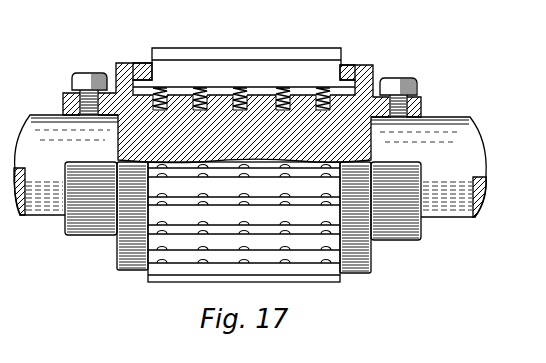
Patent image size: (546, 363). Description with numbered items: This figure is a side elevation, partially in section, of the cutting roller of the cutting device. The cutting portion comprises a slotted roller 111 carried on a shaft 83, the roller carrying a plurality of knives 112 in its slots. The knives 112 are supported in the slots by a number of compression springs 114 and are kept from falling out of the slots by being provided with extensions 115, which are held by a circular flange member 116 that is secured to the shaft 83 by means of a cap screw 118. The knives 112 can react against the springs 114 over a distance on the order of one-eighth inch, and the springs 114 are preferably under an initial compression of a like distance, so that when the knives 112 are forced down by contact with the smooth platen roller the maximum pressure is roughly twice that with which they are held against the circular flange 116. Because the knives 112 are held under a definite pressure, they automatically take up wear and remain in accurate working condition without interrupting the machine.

The shaft 83 is at (40, 116).
The slotted roller 111 is at (92, 235).
The knives 112 is at (363, 36).
The compression springs 114 is at (296, 93).
The extensions 115 is at (145, 76).
The circular flange member 116 is at (116, 63).
The cap screw 118 is at (82, 80).